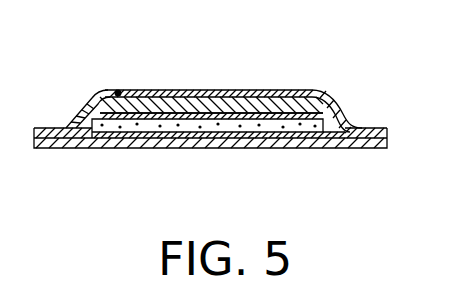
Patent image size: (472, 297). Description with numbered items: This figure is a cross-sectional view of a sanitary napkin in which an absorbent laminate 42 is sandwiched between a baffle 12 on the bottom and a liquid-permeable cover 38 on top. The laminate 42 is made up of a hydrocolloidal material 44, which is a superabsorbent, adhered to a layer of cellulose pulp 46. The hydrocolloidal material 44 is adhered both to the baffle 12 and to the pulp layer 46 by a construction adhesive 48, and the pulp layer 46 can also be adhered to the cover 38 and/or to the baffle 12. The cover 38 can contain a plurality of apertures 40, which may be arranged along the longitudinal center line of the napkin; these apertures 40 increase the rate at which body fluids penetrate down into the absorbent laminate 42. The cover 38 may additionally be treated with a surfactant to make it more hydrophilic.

The baffle 12 is at (363, 150).
The liquid-permeable cover 38 is at (73, 110).
The apertures 40 is at (187, 93).
The laminate 42 is at (116, 90).
The hydrocolloidal material 44 is at (241, 135).
The layer of cellulose pulp 46 is at (290, 100).
The construction adhesive 48 is at (343, 117).